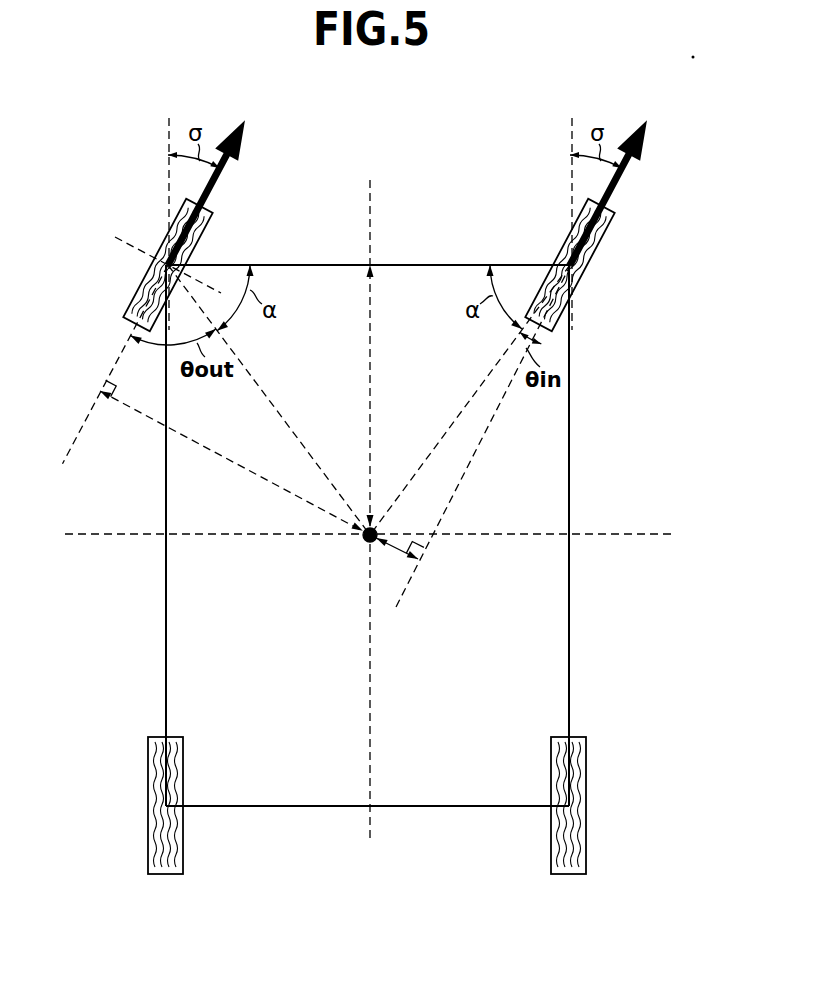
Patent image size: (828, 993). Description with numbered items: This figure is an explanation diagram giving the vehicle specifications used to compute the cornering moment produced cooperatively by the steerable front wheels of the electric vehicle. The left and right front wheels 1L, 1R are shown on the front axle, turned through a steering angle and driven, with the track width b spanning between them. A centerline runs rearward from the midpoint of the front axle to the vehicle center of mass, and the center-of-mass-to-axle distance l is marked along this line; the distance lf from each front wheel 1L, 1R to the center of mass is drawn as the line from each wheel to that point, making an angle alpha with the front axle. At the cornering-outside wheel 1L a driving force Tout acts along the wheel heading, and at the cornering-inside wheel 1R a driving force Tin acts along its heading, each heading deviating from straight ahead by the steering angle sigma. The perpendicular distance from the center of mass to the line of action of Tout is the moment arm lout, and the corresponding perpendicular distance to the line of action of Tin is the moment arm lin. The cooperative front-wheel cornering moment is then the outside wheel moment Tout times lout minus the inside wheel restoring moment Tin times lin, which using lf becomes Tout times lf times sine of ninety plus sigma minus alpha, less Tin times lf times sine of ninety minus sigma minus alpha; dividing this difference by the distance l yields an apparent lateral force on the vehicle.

The left front wheel 1L is at (164, 229).
The right front wheel 1R is at (600, 248).
The cornering-outside wheel driving force Tout is at (247, 143).
The cornering-inside wheel driving force Tin is at (648, 143).
The track width b is at (410, 264).
The center-of-mass-to-axle distance l is at (369, 373).
The wheel-to-center-of-mass distance lf is at (277, 406).
The cornering-outside wheel moment arm lout is at (243, 472).
The cornering-inside wheel moment arm lin is at (390, 549).